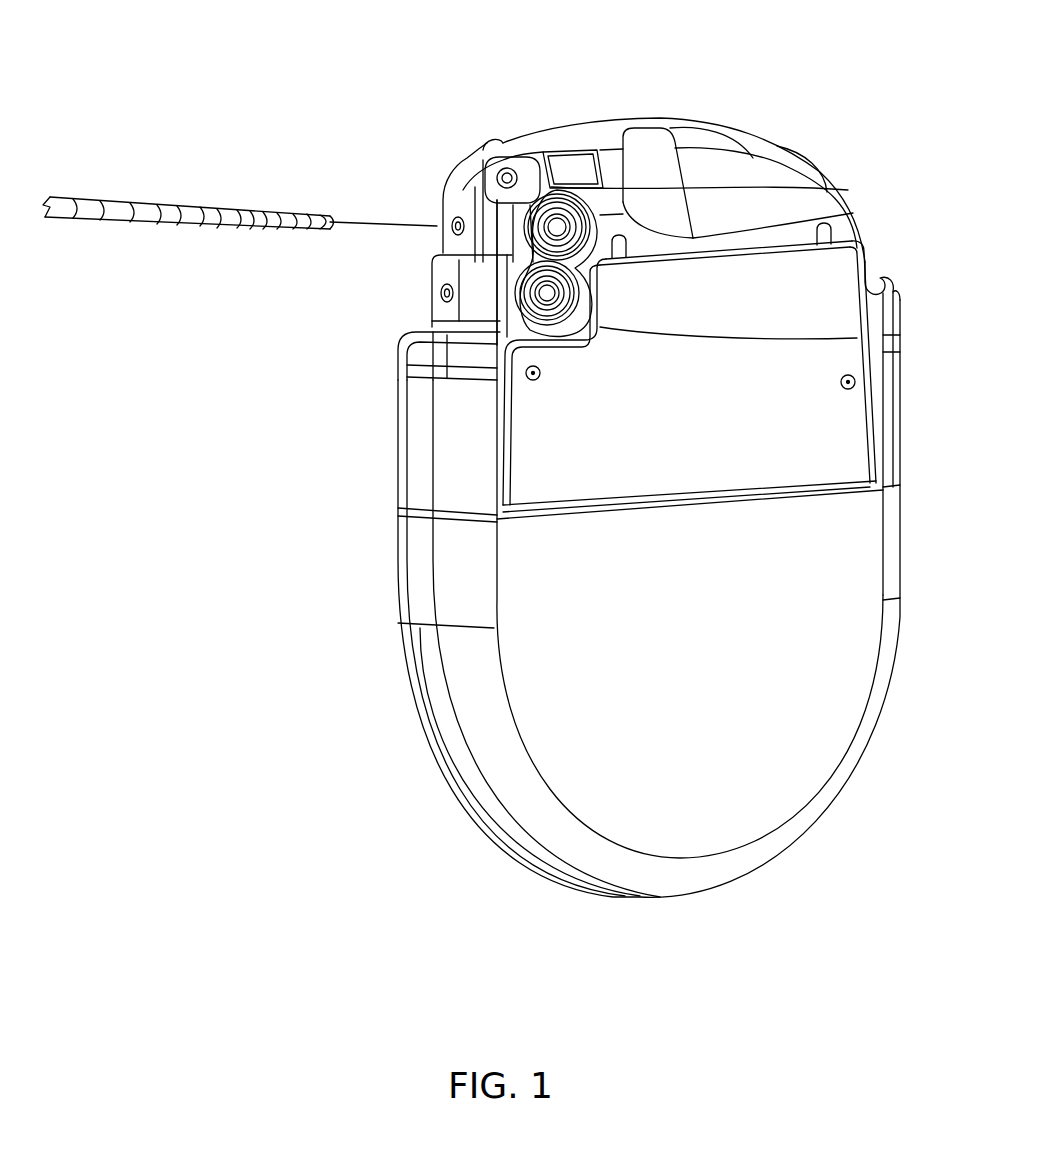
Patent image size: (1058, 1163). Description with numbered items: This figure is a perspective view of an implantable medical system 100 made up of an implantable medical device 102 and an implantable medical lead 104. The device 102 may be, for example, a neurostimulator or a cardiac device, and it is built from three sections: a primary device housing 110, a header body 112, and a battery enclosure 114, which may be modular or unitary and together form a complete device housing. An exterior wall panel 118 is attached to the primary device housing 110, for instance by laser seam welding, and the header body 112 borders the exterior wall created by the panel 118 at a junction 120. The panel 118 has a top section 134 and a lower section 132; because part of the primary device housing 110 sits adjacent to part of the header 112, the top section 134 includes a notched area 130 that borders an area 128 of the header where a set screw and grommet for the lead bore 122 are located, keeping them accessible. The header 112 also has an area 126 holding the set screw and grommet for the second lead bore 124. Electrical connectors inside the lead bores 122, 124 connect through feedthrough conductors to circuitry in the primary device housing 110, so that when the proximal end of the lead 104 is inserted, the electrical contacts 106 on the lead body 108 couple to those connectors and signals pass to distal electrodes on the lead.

The implantable medical system 100 is at (207, 100).
The implantable medical device 102 is at (800, 832).
The implantable medical lead 104 is at (215, 233).
The electrical contacts 106 is at (303, 211).
The lead body 108 is at (145, 205).
The primary device housing 110 is at (430, 445).
The header body 112 is at (787, 162).
The battery enclosure 114 is at (587, 702).
The exterior wall panel 118 is at (790, 442).
The junction 120 is at (787, 253).
The lead bore 122 is at (437, 295).
The lead bore 124 is at (455, 222).
The area 126 is at (559, 222).
The area 128 is at (578, 265).
The notched area 130 is at (864, 338).
The lower section 132 is at (770, 393).
The top section 134 is at (787, 297).